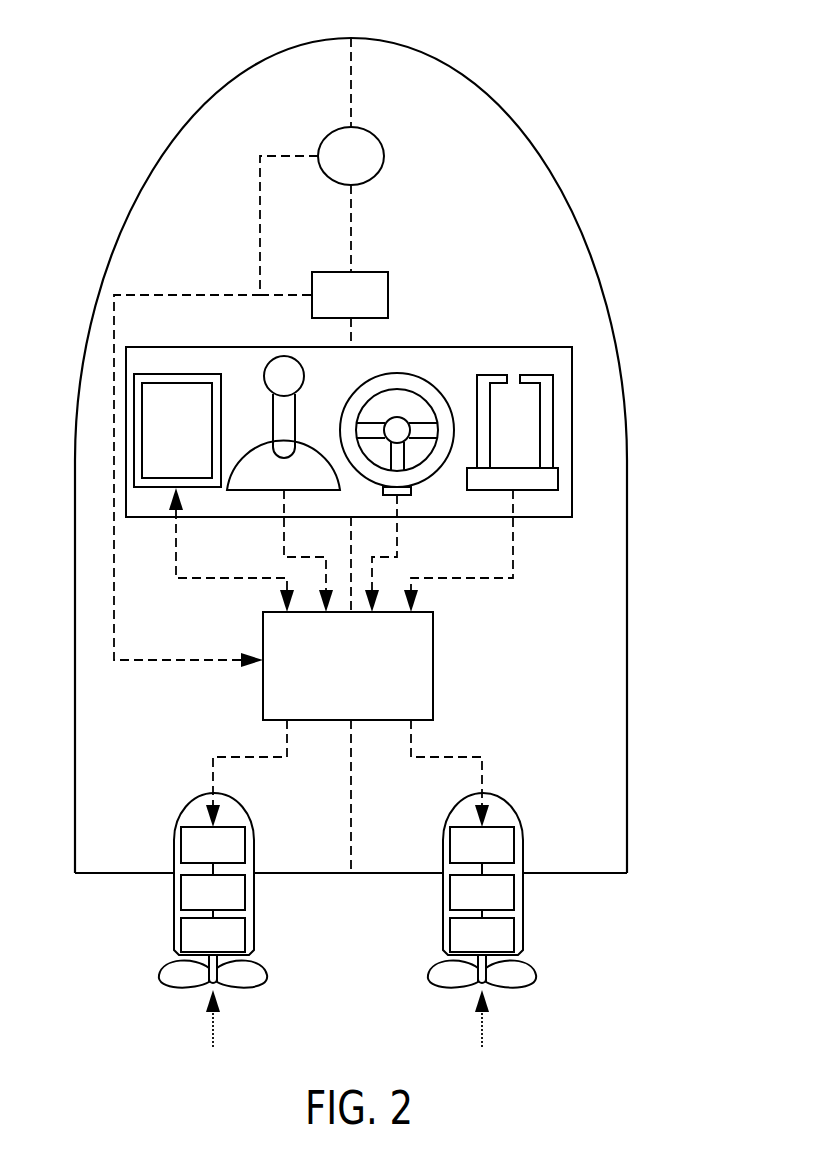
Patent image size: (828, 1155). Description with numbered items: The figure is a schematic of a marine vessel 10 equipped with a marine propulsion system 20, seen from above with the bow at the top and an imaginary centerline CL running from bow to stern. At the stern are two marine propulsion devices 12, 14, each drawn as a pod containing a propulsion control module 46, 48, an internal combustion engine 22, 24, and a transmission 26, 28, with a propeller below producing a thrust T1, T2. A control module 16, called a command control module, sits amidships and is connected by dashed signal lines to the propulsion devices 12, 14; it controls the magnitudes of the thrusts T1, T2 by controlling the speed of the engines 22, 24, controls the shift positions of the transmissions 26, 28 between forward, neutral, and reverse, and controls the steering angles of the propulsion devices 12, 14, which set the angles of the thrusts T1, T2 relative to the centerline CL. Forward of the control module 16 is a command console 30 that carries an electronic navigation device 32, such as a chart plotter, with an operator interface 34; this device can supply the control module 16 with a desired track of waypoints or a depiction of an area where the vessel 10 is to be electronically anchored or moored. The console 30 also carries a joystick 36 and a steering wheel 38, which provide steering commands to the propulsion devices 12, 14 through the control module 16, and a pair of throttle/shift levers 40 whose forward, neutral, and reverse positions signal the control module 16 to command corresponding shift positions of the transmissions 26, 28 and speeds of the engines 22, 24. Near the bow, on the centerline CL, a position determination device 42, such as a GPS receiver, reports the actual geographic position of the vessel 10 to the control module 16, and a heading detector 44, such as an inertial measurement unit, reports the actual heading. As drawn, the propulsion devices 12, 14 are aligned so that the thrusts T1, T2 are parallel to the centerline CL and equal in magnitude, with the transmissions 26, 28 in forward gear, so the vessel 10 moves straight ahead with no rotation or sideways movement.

The vessel 10 is at (553, 165).
The centerline CL is at (352, 58).
The position determination device 42 is at (367, 128).
The heading detector 44 is at (368, 272).
The command console 30 is at (500, 347).
The electronic navigation device 32 is at (202, 400).
The operator interface 34 is at (221, 423).
The joystick 36 is at (298, 395).
The steering wheel 38 is at (412, 373).
The throttle/shift levers 40 is at (575, 395).
The marine propulsion system 20 is at (371, 719).
The control module 16 is at (433, 678).
The first marine propulsion device 12 is at (217, 890).
The second marine propulsion device 14 is at (479, 890).
The propulsion control module 46 is at (178, 840).
The propulsion control module 48 is at (522, 843).
The internal combustion engine 22 is at (178, 900).
The internal combustion engine 24 is at (522, 890).
The transmission 26 is at (178, 938).
The transmission 28 is at (522, 930).
The thrust T1 is at (213, 1023).
The thrust T2 is at (482, 1023).